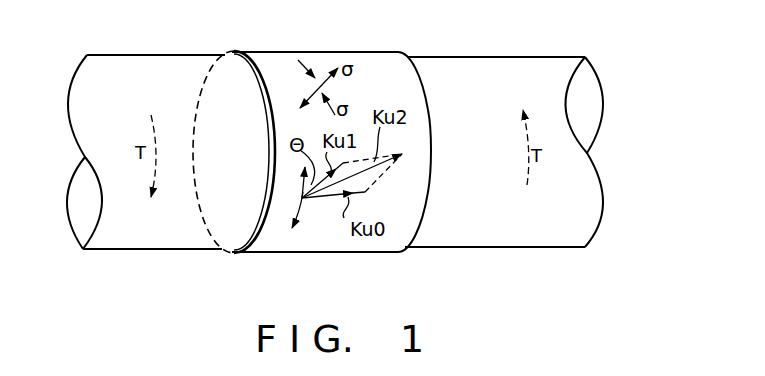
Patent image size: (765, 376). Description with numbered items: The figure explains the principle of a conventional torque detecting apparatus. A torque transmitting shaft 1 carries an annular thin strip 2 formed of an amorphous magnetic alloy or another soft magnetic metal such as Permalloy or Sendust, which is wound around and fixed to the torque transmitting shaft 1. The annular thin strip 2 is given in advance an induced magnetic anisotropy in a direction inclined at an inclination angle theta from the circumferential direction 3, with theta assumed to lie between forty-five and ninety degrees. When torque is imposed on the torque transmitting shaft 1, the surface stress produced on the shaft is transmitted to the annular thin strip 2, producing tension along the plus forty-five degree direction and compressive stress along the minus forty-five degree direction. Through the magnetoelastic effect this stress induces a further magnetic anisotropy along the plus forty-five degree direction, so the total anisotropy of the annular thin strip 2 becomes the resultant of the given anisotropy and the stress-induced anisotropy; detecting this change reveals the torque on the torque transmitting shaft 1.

The torque transmitting shaft 1 is at (502, 65).
The annular thin strip 2 is at (383, 58).
The circumferential direction 3 is at (302, 208).